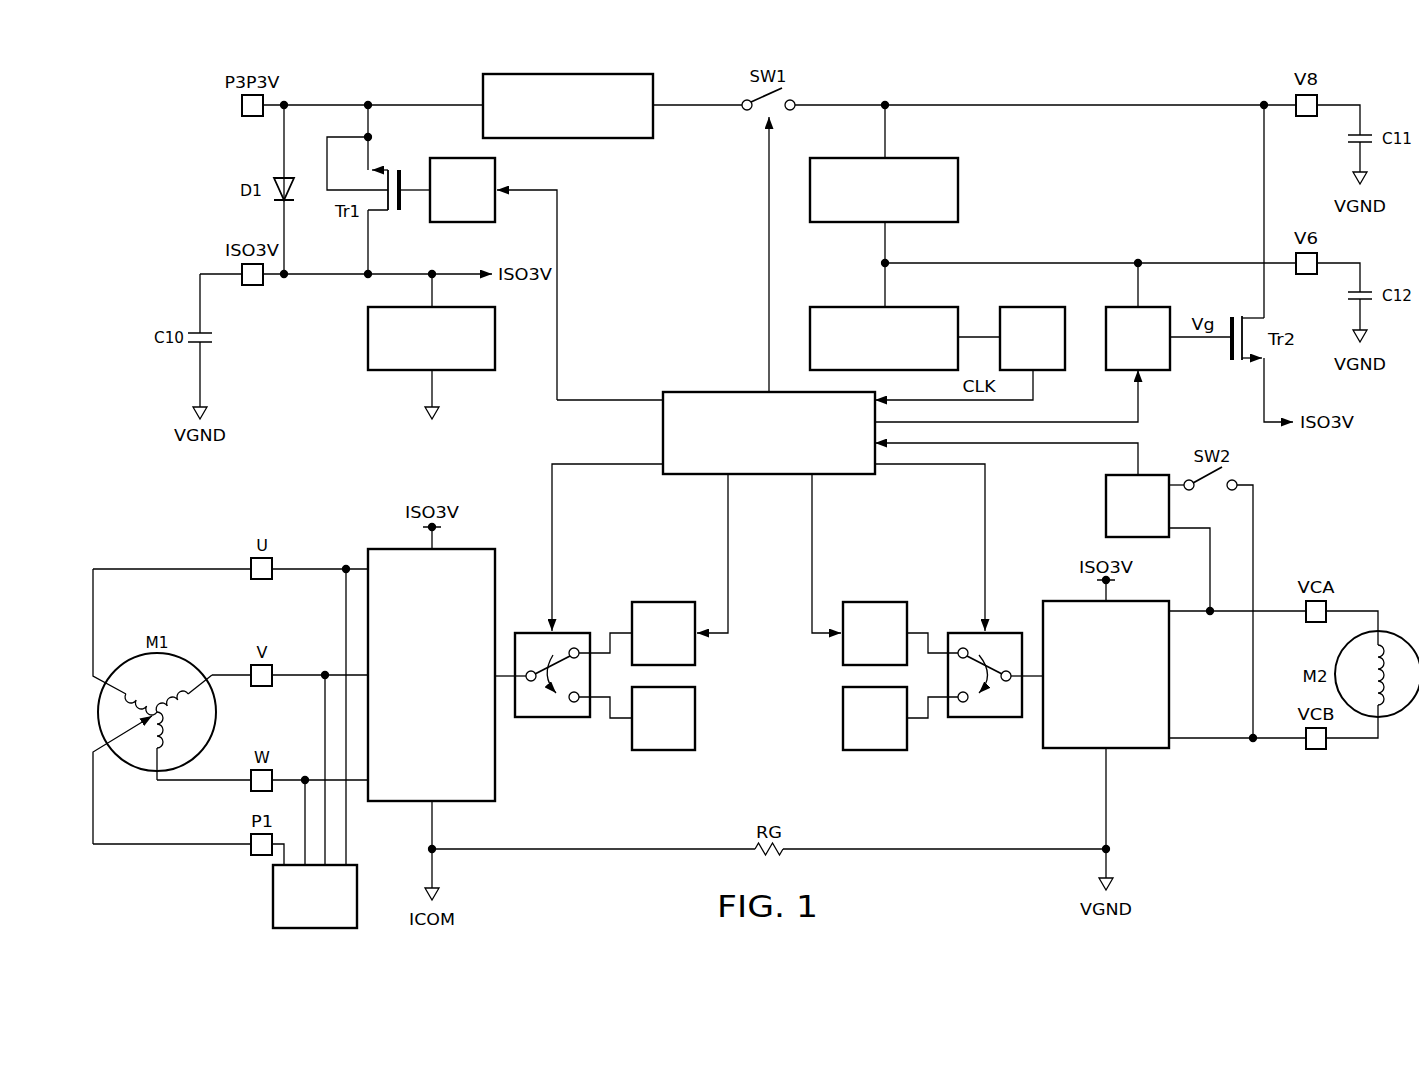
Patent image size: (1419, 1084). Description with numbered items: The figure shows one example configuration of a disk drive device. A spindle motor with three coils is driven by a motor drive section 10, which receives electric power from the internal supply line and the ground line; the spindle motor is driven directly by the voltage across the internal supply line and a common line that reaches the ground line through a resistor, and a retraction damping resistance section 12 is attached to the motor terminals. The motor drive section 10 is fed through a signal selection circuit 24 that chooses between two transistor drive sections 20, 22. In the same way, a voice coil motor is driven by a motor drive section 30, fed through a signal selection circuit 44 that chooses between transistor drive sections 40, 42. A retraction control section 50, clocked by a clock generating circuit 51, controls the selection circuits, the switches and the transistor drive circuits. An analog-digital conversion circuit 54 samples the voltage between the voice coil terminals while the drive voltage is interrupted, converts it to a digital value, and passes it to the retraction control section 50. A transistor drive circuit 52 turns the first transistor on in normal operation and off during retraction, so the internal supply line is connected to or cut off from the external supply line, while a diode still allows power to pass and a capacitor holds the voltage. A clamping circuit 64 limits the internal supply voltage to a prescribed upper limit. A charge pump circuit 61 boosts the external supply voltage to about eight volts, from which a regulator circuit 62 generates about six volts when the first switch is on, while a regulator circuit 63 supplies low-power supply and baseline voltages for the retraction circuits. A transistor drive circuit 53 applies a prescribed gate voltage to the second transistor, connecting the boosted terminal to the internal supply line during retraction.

The motor drive section 10 is at (396, 801).
The retraction damping resistance section 12 is at (328, 909).
The transistor drive section 20 is at (676, 646).
The transistor drive section 22 is at (676, 731).
The signal selection circuit 24 is at (549, 717).
The motor drive section 30 is at (1138, 748).
The transistor drive section 40 is at (888, 646).
The transistor drive section 42 is at (888, 731).
The signal selection circuit 44 is at (990, 717).
The retraction control section 50 is at (748, 392).
The clock generating circuit 51 is at (1045, 352).
The transistor drive circuit 52 is at (475, 203).
The transistor drive circuit 53 is at (1151, 352).
The analog-digital conversion circuit 54 is at (1158, 537).
The charge pump circuit 61 is at (483, 87).
The regulator circuit 62 is at (958, 190).
The regulator circuit 63 is at (843, 307).
The clamping circuit 64 is at (368, 337).